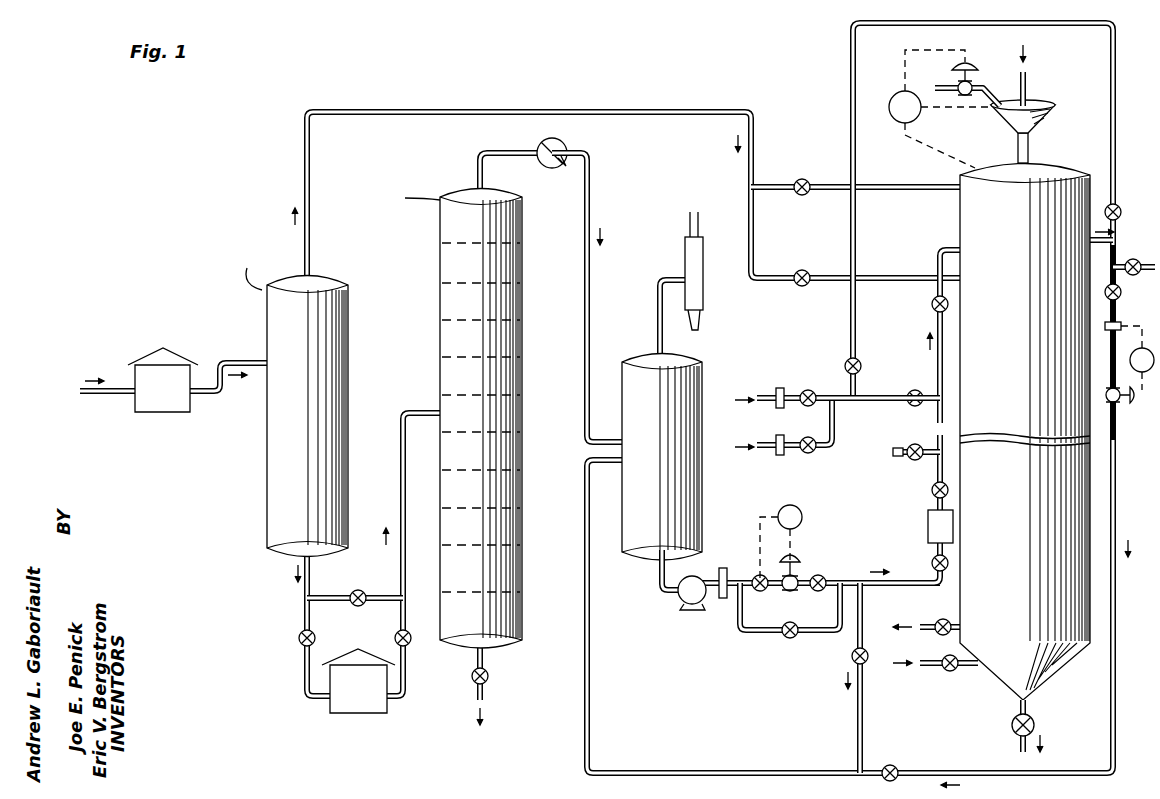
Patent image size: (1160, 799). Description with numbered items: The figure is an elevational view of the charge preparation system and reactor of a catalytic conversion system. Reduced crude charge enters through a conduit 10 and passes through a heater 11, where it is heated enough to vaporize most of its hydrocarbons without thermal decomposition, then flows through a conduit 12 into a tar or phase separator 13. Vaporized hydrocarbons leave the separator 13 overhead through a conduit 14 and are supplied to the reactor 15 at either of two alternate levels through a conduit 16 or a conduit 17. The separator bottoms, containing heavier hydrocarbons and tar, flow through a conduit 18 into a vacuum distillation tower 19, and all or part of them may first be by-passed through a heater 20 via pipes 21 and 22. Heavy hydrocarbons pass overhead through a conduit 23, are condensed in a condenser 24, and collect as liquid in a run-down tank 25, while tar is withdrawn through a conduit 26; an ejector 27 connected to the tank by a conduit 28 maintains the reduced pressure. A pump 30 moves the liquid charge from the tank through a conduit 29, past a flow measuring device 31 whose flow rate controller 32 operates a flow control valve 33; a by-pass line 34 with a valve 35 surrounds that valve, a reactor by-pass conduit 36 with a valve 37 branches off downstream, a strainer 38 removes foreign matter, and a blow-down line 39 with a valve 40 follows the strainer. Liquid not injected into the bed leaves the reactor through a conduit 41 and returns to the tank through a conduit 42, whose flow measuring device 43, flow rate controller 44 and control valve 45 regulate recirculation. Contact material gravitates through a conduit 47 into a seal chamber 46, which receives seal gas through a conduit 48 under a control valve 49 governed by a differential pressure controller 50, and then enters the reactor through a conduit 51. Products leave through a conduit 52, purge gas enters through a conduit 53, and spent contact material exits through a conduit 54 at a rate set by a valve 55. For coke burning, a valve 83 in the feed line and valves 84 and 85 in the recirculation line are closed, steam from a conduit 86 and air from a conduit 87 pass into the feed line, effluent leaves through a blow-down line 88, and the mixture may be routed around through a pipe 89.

The conduit 10 is at (103, 395).
The heater 11 is at (163, 392).
The conduit 12 is at (248, 364).
The tar or phase separator 13 is at (355, 320).
The conduit 14 is at (406, 110).
The reactor 15 is at (1090, 160).
The conduit 16 is at (767, 184).
The conduit 17 is at (757, 288).
The conduit 18 is at (400, 458).
The vacuum distillation tower 19 is at (440, 262).
The heater 20 is at (357, 693).
The pipe 21 is at (300, 661).
The pipe 22 is at (396, 700).
The conduit 23 is at (594, 198).
The condenser 24 is at (548, 168).
The run-down tank 25 is at (693, 500).
The conduit 26 is at (488, 656).
The ejector 27 is at (705, 275).
The conduit 28 is at (663, 275).
The conduit 29 is at (936, 372).
The pump 30 is at (670, 608).
The flow measuring device 31 is at (723, 600).
The flow rate controller 32 is at (783, 544).
The flow control valve 33 is at (802, 580).
The by-pass line 34 is at (745, 640).
The valve 35 is at (785, 642).
The reactor by-pass conduit 36 is at (856, 730).
The valve 37 is at (868, 662).
The strainer 38 is at (928, 532).
The blow-down line 39 is at (909, 444).
The valve 40 is at (912, 458).
The conduit 41 is at (1118, 250).
The conduit 42 is at (580, 592).
The flow measuring device 43 is at (1130, 316).
The flow rate controller 44 is at (1139, 358).
The control valve 45 is at (1123, 405).
The seal chamber 46 is at (1050, 103).
The conduit 47 is at (1032, 78).
The conduit 48 is at (994, 90).
The control valve 49 is at (975, 66).
The differential pressure controller 50 is at (939, 109).
The conduit 51 is at (1030, 140).
The conduit 52 is at (938, 620).
The conduit 53 is at (928, 668).
The conduit 54 is at (1032, 705).
The valve 55 is at (1036, 727).
The valve 83 is at (930, 490).
The valve 84 is at (893, 767).
The valve 85 is at (1128, 290).
The conduit 86 is at (818, 455).
The conduit 87 is at (845, 395).
The blow-down line 88 is at (1143, 258).
The pipe 89 is at (848, 232).